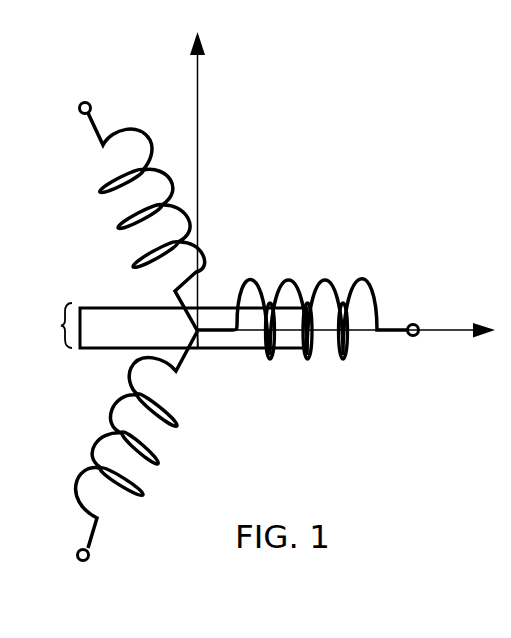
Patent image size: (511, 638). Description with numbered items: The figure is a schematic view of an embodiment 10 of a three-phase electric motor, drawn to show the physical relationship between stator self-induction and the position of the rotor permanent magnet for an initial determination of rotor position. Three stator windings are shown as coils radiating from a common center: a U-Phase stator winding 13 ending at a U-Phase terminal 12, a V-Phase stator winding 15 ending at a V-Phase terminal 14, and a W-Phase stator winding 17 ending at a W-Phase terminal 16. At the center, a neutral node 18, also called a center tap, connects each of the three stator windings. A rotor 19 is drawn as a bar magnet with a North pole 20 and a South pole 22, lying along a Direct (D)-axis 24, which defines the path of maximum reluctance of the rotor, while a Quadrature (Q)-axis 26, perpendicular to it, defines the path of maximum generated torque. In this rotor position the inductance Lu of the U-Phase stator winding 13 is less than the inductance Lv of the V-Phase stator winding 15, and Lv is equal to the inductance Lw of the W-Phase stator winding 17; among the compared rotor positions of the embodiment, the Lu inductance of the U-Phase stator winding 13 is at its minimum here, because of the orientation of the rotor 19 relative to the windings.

The embodiment of a three-phase electric motor 10 is at (341, 105).
The U-Phase terminal 12 is at (421, 306).
The U-Phase stator winding 13 is at (329, 279).
The V-Phase terminal 14 is at (84, 100).
The V-Phase stator winding 15 is at (118, 227).
The W-Phase terminal 16 is at (77, 553).
The W-Phase stator winding 17 is at (158, 462).
The neutral node 18 is at (198, 333).
The rotor 19 is at (61, 325).
The North pole 20 is at (212, 307).
The South pole 22 is at (118, 307).
The Direct (D)-axis 24 is at (487, 335).
The Quadrature (Q)-axis 26 is at (190, 46).